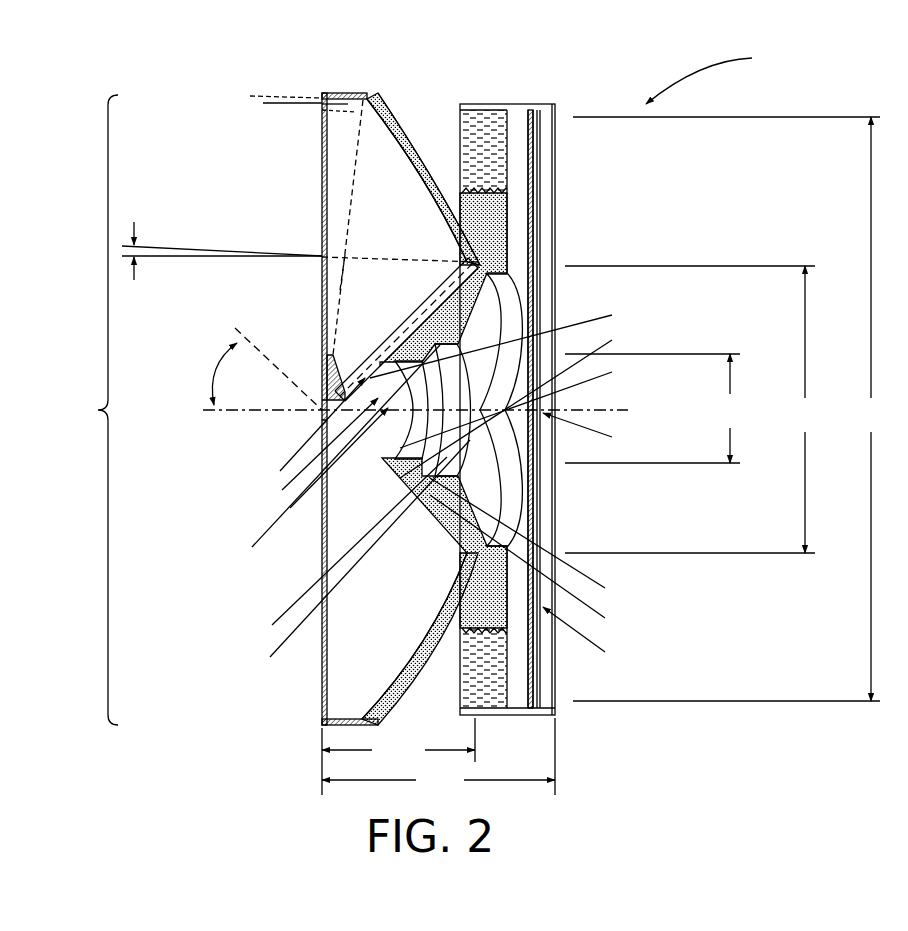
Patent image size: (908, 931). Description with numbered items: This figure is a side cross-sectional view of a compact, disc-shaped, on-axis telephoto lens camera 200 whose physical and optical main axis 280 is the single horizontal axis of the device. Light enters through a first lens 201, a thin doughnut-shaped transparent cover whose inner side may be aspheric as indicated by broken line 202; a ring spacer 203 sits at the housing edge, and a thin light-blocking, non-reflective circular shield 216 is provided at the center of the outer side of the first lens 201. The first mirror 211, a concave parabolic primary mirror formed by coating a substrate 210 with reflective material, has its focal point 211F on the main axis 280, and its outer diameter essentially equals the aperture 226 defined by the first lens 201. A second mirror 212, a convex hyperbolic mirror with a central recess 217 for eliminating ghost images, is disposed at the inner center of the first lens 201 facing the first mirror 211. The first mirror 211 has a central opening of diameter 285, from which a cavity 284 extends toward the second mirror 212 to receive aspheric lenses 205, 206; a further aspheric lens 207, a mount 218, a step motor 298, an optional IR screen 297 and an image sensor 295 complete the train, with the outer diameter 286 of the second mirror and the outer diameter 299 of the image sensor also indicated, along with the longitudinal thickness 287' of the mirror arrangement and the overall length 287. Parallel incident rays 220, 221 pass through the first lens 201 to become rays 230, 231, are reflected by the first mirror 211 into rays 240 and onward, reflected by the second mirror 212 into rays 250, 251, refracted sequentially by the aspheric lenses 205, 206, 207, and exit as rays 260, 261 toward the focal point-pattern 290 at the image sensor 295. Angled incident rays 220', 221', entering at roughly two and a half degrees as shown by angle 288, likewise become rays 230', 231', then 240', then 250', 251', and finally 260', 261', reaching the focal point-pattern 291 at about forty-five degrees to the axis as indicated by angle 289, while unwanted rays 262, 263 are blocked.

The telephoto lens camera 200 is at (718, 76).
The first lens 201 is at (319, 163).
The broken line 202 is at (322, 145).
The ring spacer 203 is at (348, 90).
The aspheric lens 205 is at (415, 432).
The aspheric lens 206 is at (455, 468).
The aspheric lens 207 is at (500, 498).
The substrate 210 is at (397, 143).
The first mirror 211 is at (410, 175).
The focal point 211F is at (318, 421).
The second mirror 212 is at (320, 411).
The shield 216 is at (320, 527).
The recess 217 is at (280, 471).
The mount 218 is at (498, 230).
The incident light ray 220 is at (238, 116).
The incident light ray 220' is at (235, 90).
The incident light ray 221 is at (300, 269).
The incident light ray 221' is at (222, 237).
The aperture 226 is at (86, 410).
The light ray 230 is at (297, 117).
The light ray 230' is at (288, 129).
The light ray 231 is at (367, 329).
The light ray 231' is at (360, 329).
The light ray 240 is at (308, 227).
The light ray 240' is at (295, 252).
The light ray 250 is at (299, 449).
The light ray 250' is at (324, 546).
The light ray 251 is at (311, 463).
The light ray 251' is at (334, 554).
The light ray 260 is at (540, 404).
The light ray 260' is at (559, 538).
The light ray 261 is at (539, 405).
The light ray 261' is at (559, 561).
The unwanted light ray 262 is at (249, 545).
The unwanted light ray 263 is at (345, 635).
The main axis 280 is at (222, 413).
The cavity 284 is at (612, 315).
The diameter 285 is at (693, 409).
The outer diameter 286 is at (655, 408).
The overall length dimension 287 is at (438, 756).
The longitudinal thickness 287' is at (398, 756).
The angle 288 is at (140, 241).
The angle 289 is at (264, 369).
The focal point-pattern 290 is at (612, 437).
The focal point-pattern 291 is at (605, 652).
The image sensor 295 is at (550, 313).
The IR screen 297 is at (536, 252).
The step motor 298 is at (491, 160).
The outer diameter 299 is at (730, 409).